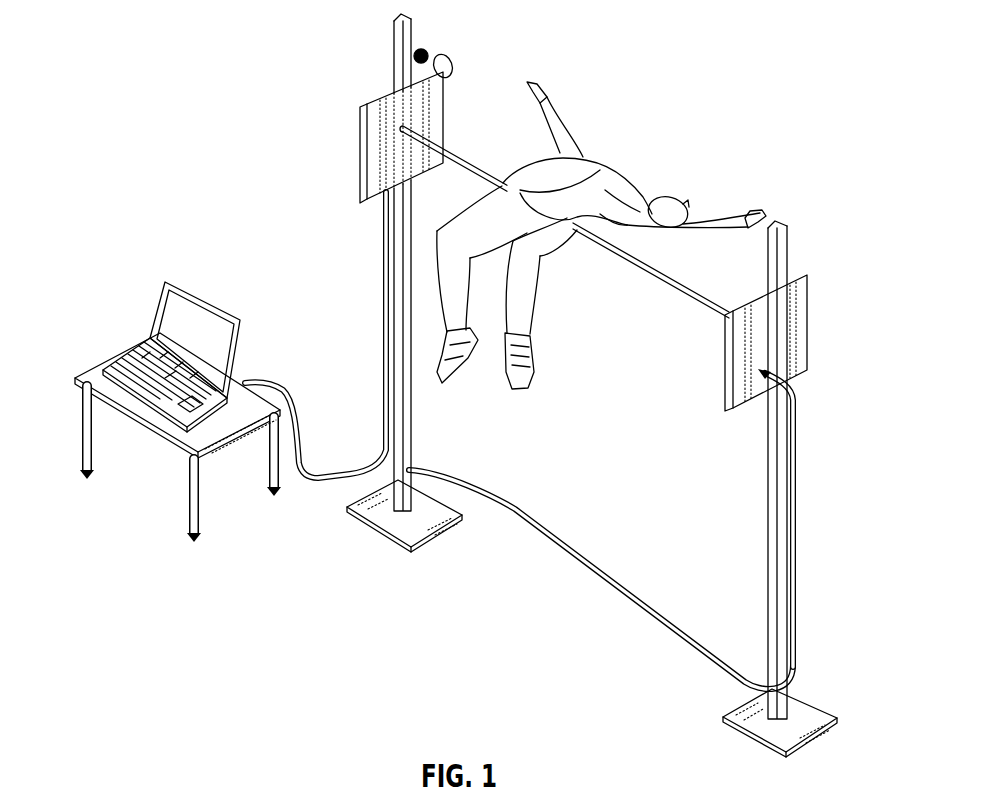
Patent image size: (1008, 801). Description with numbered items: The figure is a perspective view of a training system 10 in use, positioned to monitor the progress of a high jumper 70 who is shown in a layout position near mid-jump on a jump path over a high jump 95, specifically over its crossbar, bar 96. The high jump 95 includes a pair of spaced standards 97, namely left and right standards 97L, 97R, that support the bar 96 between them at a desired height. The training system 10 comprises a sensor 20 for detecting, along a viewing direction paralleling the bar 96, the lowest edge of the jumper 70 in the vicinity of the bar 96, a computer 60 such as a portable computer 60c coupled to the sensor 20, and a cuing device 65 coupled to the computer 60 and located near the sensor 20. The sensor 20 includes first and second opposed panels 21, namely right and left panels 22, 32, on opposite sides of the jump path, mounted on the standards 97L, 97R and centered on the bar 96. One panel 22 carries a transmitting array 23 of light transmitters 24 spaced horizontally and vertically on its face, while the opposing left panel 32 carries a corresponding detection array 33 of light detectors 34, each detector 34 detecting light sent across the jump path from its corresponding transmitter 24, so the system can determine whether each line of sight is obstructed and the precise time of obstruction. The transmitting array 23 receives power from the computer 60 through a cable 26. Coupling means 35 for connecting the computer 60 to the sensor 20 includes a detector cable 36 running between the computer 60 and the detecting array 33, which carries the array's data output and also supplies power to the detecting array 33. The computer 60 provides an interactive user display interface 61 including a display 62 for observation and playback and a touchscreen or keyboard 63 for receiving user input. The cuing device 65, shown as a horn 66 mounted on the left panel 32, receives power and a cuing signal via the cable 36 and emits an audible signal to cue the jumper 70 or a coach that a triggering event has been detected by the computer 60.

The training system 10 is at (255, 70).
The sensor 20 is at (583, 276).
The panel 21 is at (583, 244).
The right panel 22 is at (810, 300).
The transmitting array 23 is at (731, 323).
The light transmitter 24 is at (722, 379).
The cable 26 is at (707, 650).
The left panel 32 is at (369, 150).
The detection array 33 is at (375, 150).
The light detector 34 is at (363, 199).
The coupling means 35 is at (366, 458).
The detector cable 36 is at (368, 335).
The computer 60 is at (141, 315).
The portable computer 60c is at (150, 357).
The interactive user display interface 61 is at (100, 368).
The display 62 is at (200, 320).
The touchscreen or keyboard 63 is at (86, 417).
The cuing device 65 is at (428, 50).
The horn 66 is at (453, 63).
The high jumper 70 is at (612, 111).
The high jump 95 is at (565, 440).
The bar 96 is at (487, 172).
The standards 97 is at (558, 440).
The left standard 97L is at (368, 335).
The right standard 97R is at (789, 633).